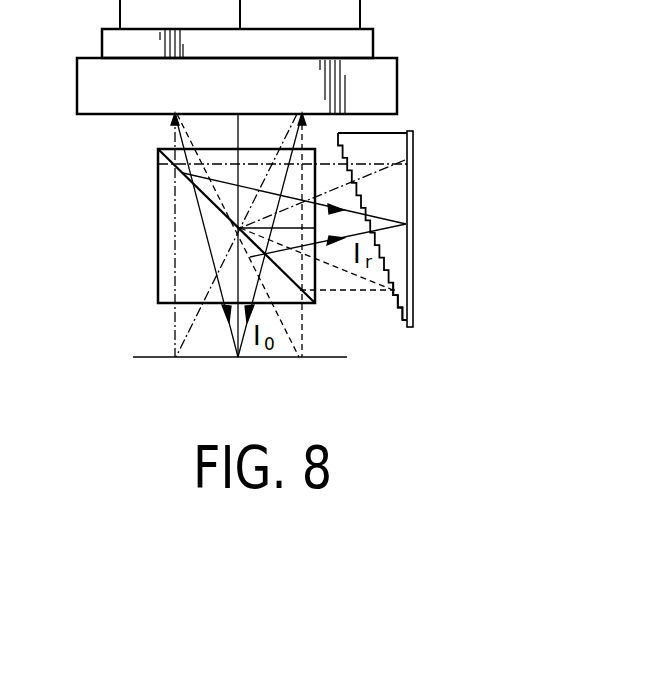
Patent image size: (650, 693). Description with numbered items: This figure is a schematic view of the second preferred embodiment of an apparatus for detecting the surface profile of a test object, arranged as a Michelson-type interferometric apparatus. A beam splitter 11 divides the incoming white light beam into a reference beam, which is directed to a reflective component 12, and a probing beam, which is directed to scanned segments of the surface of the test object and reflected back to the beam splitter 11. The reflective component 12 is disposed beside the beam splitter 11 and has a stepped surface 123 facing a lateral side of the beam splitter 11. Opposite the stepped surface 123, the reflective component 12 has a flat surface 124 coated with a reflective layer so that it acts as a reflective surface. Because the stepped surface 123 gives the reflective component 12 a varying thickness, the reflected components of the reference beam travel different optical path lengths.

The beam splitter 11 is at (158, 246).
The reflective component 12 is at (438, 252).
The stepped surface 123 is at (398, 302).
The flat surface 124 is at (398, 303).